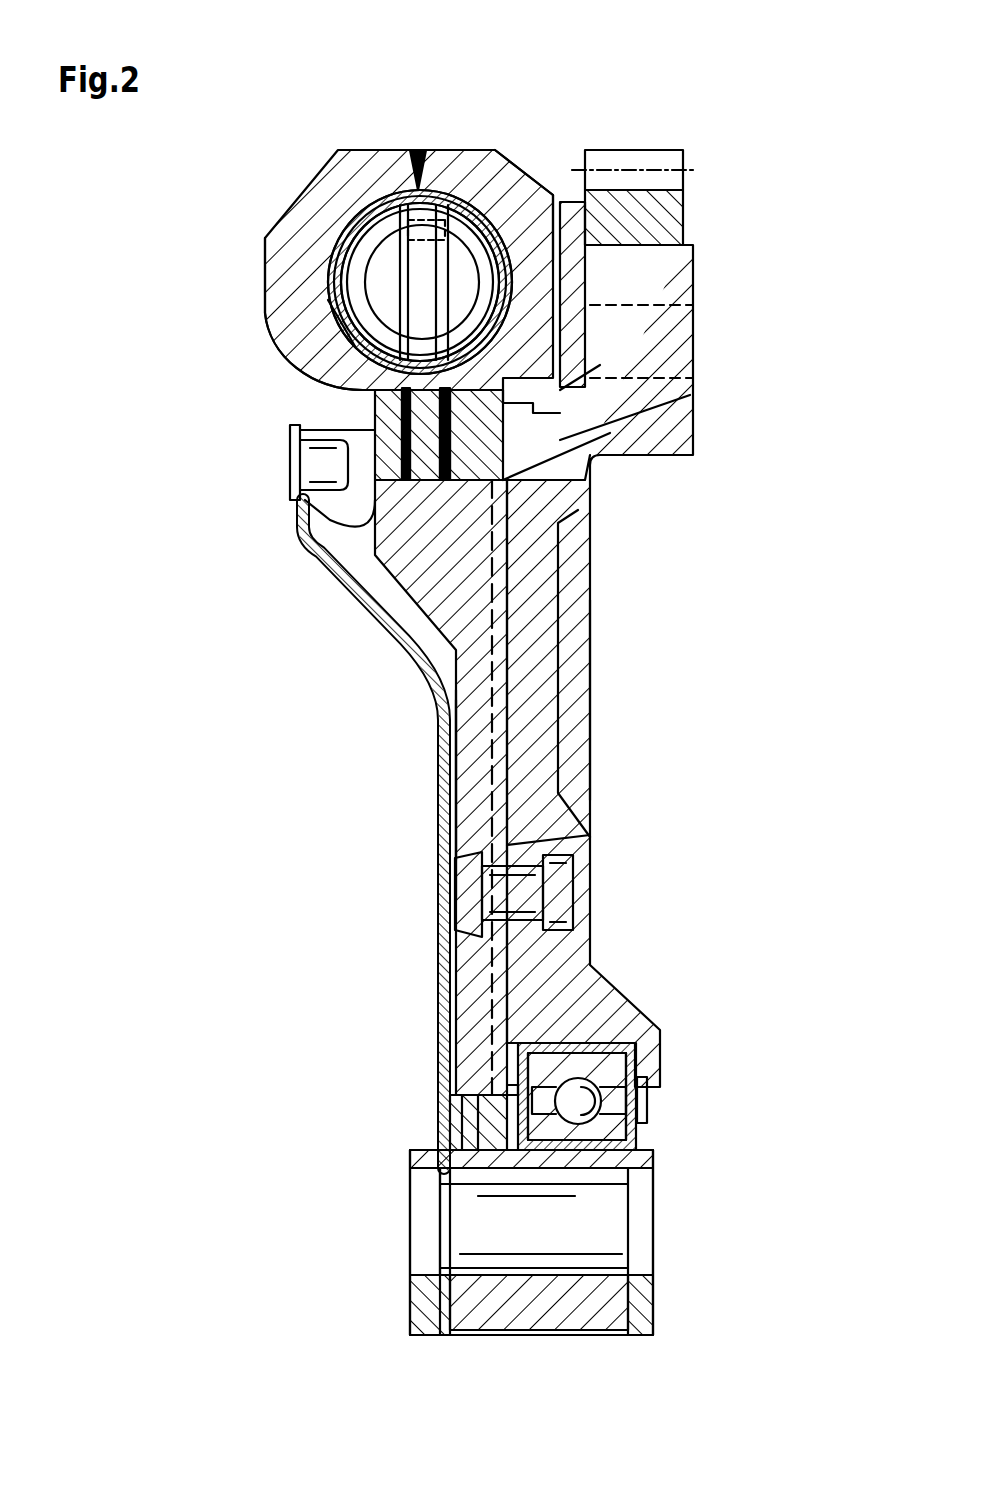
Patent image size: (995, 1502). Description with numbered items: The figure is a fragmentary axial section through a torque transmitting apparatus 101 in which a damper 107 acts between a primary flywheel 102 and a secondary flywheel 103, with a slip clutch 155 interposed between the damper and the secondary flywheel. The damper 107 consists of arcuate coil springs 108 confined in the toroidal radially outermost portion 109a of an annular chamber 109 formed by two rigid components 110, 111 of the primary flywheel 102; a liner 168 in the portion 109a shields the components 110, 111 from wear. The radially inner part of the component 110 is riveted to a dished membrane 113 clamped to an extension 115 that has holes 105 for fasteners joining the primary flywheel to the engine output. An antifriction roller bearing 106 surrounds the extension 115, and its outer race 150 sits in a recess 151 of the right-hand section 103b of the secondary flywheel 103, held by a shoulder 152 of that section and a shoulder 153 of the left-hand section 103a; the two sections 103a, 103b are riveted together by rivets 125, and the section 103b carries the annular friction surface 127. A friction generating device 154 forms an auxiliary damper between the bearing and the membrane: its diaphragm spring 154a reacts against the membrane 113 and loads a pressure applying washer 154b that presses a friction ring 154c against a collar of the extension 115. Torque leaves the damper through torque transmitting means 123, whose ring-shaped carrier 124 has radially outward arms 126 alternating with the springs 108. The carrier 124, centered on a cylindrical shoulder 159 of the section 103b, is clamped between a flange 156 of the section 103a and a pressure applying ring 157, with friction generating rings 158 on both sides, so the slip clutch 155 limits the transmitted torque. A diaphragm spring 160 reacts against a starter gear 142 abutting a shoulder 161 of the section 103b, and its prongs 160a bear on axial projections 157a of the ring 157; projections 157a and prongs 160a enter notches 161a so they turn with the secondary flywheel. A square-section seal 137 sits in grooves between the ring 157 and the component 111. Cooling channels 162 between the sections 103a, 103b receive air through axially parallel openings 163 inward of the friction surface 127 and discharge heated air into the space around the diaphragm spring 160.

The torque transmitting apparatus 101 is at (665, 95).
The primary flywheel 102 is at (265, 238).
The secondary flywheel 103 is at (556, 503).
The disc-shaped section 103a is at (485, 665).
The disc-shaped section 103b is at (578, 718).
The holes 105 is at (470, 1240).
The antifriction roller bearing 106 is at (642, 1166).
The damper 107 is at (296, 318).
The energy storing elements 108 is at (346, 326).
The annular chamber 109 is at (522, 250).
The toroidal radially outermost portion 109a is at (416, 150).
The component 110 is at (312, 172).
The component 111 is at (494, 182).
The dished membrane 113 is at (438, 925).
The extension 115 is at (526, 1300).
The torque transmitting means 123 is at (340, 470).
The ring-shaped carrier 124 is at (336, 456).
The rivets 125 is at (560, 890).
The arms 126 is at (418, 286).
The friction surface 127 is at (437, 705).
The seal 137 is at (535, 405).
The starter gear 142 is at (640, 205).
The outer race 150 is at (635, 1053).
The internal groove or recess 151 is at (583, 1043).
The shoulder 152 is at (648, 1062).
The shoulder 153 is at (520, 1085).
The friction generating device 154 is at (404, 1160).
The diaphragm spring 154a is at (452, 1112).
The pressure applying washer 154b is at (470, 1132).
The friction ring 154c is at (415, 1180).
The slip clutch 155 is at (448, 392).
The flange 156 is at (390, 406).
The pressure applying ring 157 is at (560, 440).
The projections 157a is at (515, 425).
The friction generating rings 158 is at (520, 420).
The shoulder 159 is at (490, 468).
The diaphragm spring 160 is at (668, 268).
The prongs 160a is at (600, 395).
The shoulder 161 is at (600, 295).
The notches 161a is at (535, 470).
The channels 162 is at (430, 677).
The openings 163 is at (525, 838).
The liner 168 is at (452, 202).